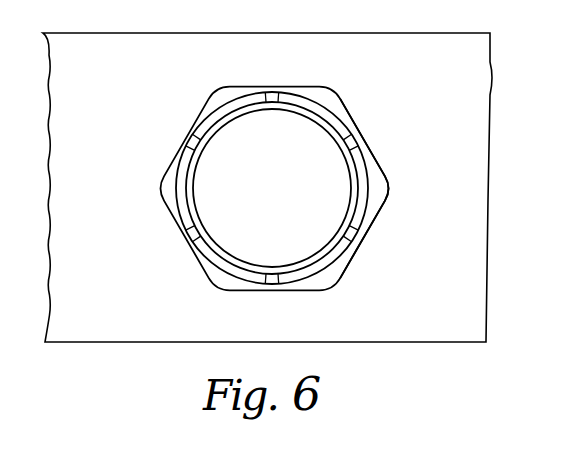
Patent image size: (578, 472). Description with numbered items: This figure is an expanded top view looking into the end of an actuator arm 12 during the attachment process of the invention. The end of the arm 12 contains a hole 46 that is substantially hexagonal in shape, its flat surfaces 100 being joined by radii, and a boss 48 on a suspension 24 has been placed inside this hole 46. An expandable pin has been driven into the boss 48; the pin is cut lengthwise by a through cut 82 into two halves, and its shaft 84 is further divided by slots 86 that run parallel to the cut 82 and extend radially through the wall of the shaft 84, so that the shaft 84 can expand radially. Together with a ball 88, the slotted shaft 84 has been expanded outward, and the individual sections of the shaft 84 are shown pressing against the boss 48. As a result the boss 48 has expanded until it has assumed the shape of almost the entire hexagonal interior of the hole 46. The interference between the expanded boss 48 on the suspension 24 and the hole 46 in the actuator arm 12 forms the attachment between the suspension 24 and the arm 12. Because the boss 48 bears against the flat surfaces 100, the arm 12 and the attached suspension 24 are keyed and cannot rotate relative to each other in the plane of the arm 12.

The actuator arm 12 is at (495, 77).
The suspension 24 is at (277, 187).
The hole 46 is at (263, 86).
The boss 48 is at (376, 182).
The cut 82 is at (273, 104).
The shaft 84 is at (345, 103).
The slots 86 is at (352, 230).
The ball 88 is at (215, 188).
The flat surfaces 100 is at (195, 141).